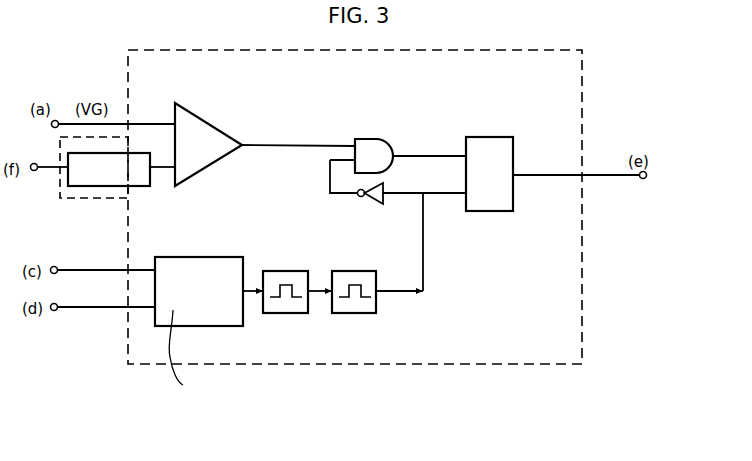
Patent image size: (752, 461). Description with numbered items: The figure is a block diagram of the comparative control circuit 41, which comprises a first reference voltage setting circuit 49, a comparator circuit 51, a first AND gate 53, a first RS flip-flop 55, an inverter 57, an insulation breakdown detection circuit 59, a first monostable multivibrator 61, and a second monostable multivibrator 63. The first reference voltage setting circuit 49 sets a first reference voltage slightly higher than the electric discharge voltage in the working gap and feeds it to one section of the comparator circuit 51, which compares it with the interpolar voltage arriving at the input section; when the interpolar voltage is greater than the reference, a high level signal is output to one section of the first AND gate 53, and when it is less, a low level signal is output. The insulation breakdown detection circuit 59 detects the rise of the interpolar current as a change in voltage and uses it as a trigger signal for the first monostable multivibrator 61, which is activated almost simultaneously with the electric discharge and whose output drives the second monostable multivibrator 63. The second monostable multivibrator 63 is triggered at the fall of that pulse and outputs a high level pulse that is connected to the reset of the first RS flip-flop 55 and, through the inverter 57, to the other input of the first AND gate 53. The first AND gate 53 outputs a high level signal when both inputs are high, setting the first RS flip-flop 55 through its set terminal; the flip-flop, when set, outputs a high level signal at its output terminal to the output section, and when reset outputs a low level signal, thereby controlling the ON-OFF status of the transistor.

The comparative control circuit 41 is at (582, 340).
The first reference voltage setting circuit 49 is at (113, 188).
The comparator circuit 51 is at (223, 130).
The first AND gate 53 is at (385, 143).
The first RS flip-flop 55 is at (505, 142).
The inverter 57 is at (377, 203).
The insulation breakdown detection circuit 59 is at (220, 258).
The first monostable multivibrator 61 is at (295, 270).
The second monostable multivibrator 63 is at (360, 271).